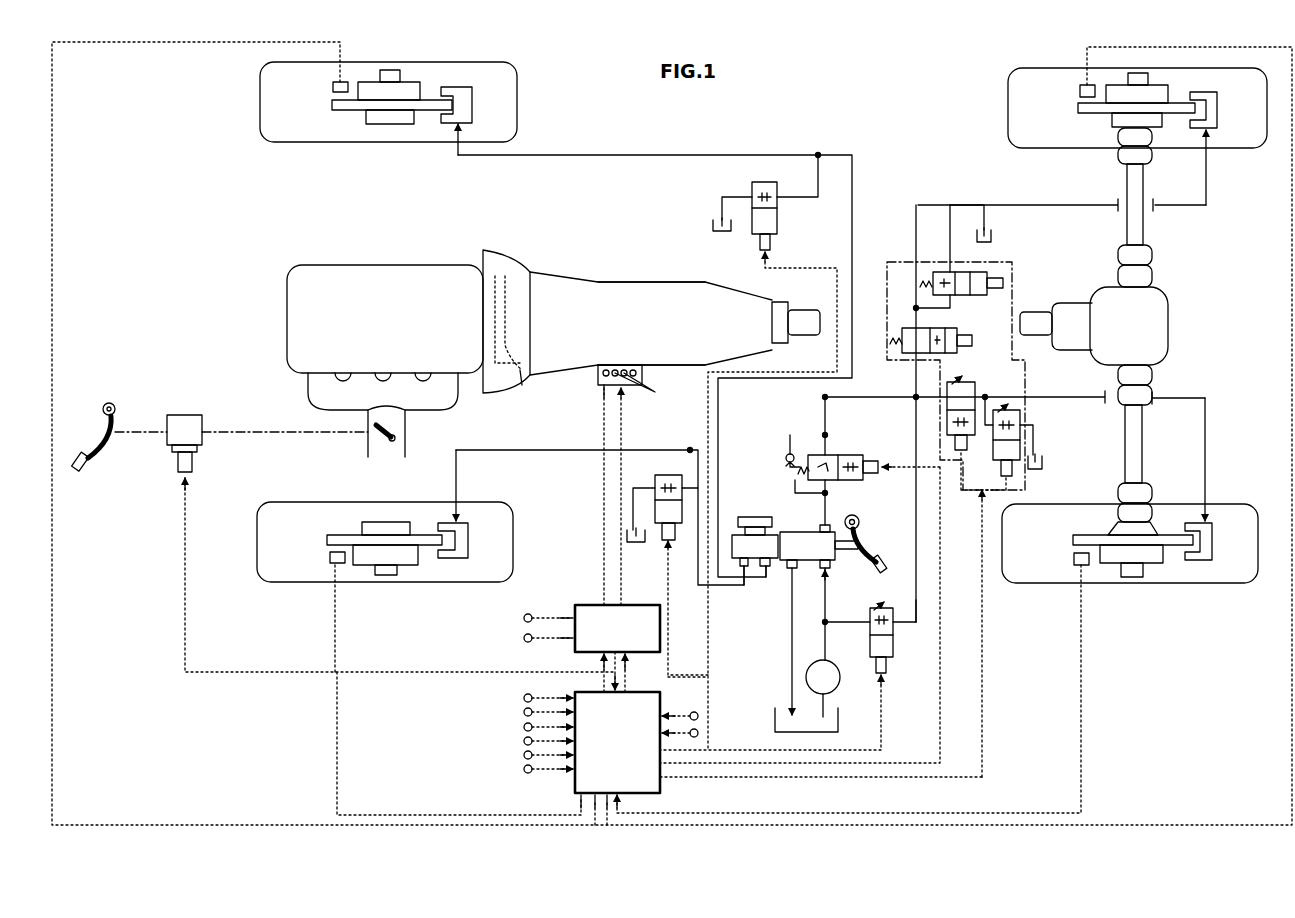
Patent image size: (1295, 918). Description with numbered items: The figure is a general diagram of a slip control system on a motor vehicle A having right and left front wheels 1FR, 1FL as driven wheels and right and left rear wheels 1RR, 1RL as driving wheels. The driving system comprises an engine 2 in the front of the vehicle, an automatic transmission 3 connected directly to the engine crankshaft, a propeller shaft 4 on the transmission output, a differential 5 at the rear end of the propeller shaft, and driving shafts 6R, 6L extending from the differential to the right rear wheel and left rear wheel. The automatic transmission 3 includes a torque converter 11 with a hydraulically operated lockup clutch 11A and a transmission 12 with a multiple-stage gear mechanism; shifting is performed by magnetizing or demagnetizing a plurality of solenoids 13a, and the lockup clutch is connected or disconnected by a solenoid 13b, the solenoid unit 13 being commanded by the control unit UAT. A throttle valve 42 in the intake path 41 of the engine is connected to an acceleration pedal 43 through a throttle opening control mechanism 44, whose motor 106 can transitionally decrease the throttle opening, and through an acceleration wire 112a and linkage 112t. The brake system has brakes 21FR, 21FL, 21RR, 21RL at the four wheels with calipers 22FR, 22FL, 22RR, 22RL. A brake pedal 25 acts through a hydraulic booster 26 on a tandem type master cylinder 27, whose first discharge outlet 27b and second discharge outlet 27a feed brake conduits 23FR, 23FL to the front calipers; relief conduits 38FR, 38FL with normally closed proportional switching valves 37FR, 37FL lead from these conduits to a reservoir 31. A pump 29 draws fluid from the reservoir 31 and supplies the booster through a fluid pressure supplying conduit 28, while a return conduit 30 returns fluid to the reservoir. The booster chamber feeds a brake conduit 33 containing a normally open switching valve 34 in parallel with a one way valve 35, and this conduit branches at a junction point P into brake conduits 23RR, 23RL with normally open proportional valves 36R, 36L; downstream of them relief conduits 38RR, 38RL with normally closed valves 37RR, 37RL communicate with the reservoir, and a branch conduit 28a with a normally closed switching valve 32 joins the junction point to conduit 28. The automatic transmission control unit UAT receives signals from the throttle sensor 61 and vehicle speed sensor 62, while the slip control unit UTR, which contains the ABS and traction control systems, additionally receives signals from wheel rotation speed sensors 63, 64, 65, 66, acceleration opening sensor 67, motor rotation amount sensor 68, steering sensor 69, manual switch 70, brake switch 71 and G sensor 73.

The motor vehicle A is at (824, 96).
The right front wheel 1FR is at (260, 95).
The left front wheel 1FL is at (262, 547).
The right rear wheel 1RR is at (1008, 105).
The left rear wheel 1RL is at (1020, 568).
The engine 2 is at (358, 283).
The automatic transmission 3 is at (612, 275).
The propeller shaft 4 is at (812, 314).
The differential 5 is at (1168, 333).
The right driving shaft 6R is at (1135, 235).
The left driving shaft 6L is at (1133, 455).
The torque converter 11 is at (522, 285).
The lockup clutch 11A is at (522, 388).
The transmission 12 is at (670, 300).
The shift position sensor 13 is at (620, 485).
The solenoids 13a is at (657, 389).
The solenoid 13b is at (600, 390).
The right front wheel brake 21FR is at (440, 74).
The left front wheel brake 21FL is at (414, 573).
The right rear wheel brake 21RR is at (1106, 80).
The left rear wheel brake 21RL is at (1158, 578).
The caliper 22FR is at (472, 108).
The caliper 22FL is at (468, 539).
The caliper 22RR is at (1217, 110).
The caliper 22RL is at (1212, 540).
The brake conduit 23FR is at (714, 155).
The brake conduit 23FL is at (548, 455).
The brake conduit 23RR is at (1000, 205).
The brake conduit 23RL is at (1205, 445).
The brake pedal 25 is at (880, 550).
The hydraulic booster 26 is at (798, 542).
The tandem type master cylinder 27 is at (752, 540).
The second discharge outlet 27a is at (766, 572).
The first discharge outlet 27b is at (744, 572).
The fluid pressure supplying conduit 28 is at (825, 640).
The branch conduit 28a is at (916, 625).
The pump 29 is at (838, 690).
The return conduit 30 is at (792, 672).
The reservoir 31 is at (728, 232).
The switching valve 32 is at (870, 612).
The brake conduit 33 is at (845, 397).
The magnetic switching valve 34 is at (860, 456).
The one way valve 35 is at (786, 456).
The magnetic proportional switching valve 36R is at (975, 322).
The magnetic proportional switching valve 36L is at (976, 398).
The magnetic proportional switching valve 37FR is at (777, 182).
The magnetic proportional switching valve 37FL is at (666, 475).
The magnetic proportional switching valve 37RR is at (938, 268).
The magnetic proportional switching valve 37RL is at (1020, 425).
The relief conduit 38FR is at (722, 197).
The relief conduit 38FL is at (633, 500).
The relief conduit 38RR is at (958, 205).
The relief conduit 38RL is at (1033, 455).
The intake path 41 is at (366, 447).
The throttle valve 42 is at (404, 432).
The acceleration pedal 43 is at (80, 470).
The throttle opening control mechanism 44 is at (190, 413).
The throttle sensor 61 is at (524, 638).
The vehicle speed sensor 62 is at (524, 616).
The wheel rotation speed sensor 63 is at (333, 566).
The wheel rotation speed sensor 64 is at (348, 80).
The wheel rotation speed sensor 65 is at (1083, 566).
The wheel rotation speed sensor 66 is at (1080, 88).
The acceleration opening sensor 67 is at (524, 697).
The motor rotation amount sensor 68 is at (524, 712).
The steering sensor 69 is at (524, 727).
The manual switch 70 is at (705, 705).
The brake switch 71 is at (698, 733).
The G sensor 73 is at (524, 771).
The motor 106 is at (193, 462).
The acceleration wire 112a is at (128, 434).
The transmission cable 112t is at (290, 432).
The junction point P is at (914, 396).
The automatic transmission control unit UAT is at (641, 648).
The slip control unit UTR is at (600, 672).